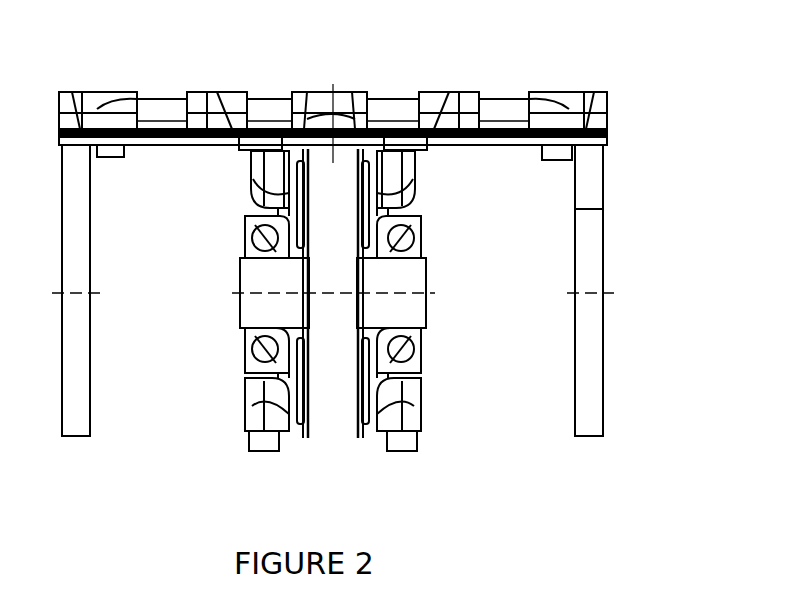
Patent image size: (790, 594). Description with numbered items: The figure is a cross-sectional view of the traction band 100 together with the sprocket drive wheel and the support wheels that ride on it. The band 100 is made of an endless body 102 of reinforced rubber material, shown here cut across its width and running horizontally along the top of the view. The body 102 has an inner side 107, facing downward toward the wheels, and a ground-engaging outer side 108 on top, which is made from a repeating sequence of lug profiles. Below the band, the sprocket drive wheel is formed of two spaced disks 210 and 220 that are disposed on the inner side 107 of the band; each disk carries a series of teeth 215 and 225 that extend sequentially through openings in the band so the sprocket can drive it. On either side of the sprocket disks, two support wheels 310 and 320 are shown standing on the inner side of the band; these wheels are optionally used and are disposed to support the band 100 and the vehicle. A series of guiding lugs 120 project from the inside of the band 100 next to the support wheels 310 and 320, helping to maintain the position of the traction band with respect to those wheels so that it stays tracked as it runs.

The traction band 100 is at (384, 236).
The endless body 102 is at (384, 92).
The inner side 107 is at (176, 155).
The ground-engaging outer side 108 is at (553, 76).
The guiding lugs 120 is at (105, 158).
The disk 210 is at (245, 313).
The teeth 215 is at (243, 149).
The disk 220 is at (425, 313).
The teeth 225 is at (425, 157).
The support wheel 310 is at (88, 326).
The support wheel 320 is at (605, 336).